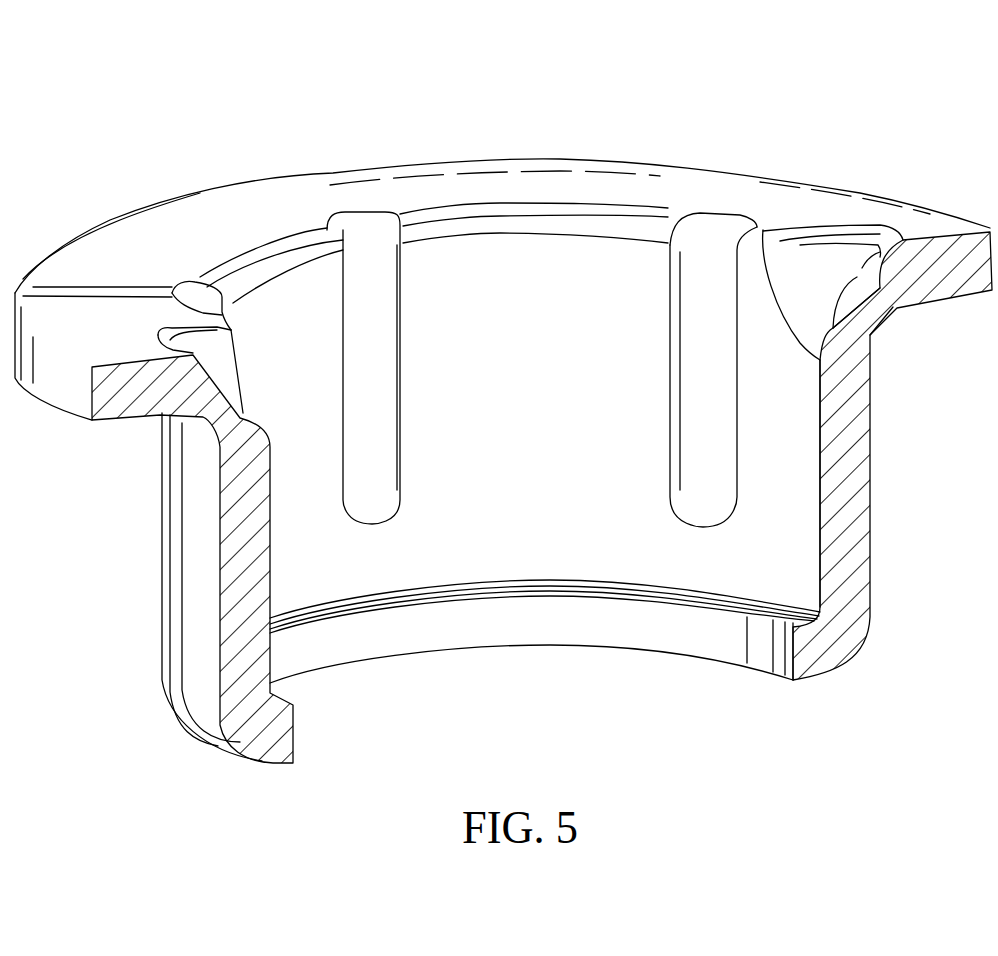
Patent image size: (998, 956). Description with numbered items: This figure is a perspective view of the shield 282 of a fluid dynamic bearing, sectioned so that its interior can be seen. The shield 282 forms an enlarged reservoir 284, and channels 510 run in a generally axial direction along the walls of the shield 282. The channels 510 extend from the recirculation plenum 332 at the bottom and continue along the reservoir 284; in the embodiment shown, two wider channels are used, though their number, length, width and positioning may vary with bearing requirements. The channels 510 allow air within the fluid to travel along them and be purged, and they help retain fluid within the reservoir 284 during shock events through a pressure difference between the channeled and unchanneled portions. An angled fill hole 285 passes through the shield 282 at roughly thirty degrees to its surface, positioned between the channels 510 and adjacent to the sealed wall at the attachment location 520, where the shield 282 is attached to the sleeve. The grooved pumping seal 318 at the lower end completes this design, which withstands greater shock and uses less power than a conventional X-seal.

The shield 282 is at (279, 110).
The attachment location 520 is at (760, 180).
The channels 510 is at (355, 293).
The angled fill hole 285 is at (875, 307).
The reservoir 284 is at (807, 443).
The recirculation plenum 332 is at (823, 538).
The grooved pumping seal 318 is at (823, 587).